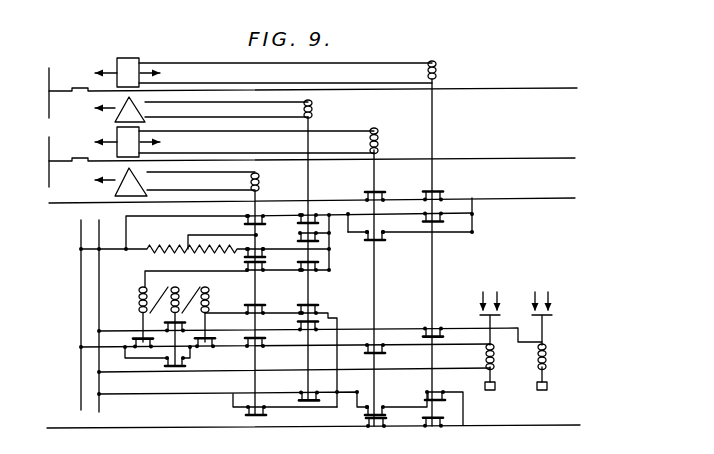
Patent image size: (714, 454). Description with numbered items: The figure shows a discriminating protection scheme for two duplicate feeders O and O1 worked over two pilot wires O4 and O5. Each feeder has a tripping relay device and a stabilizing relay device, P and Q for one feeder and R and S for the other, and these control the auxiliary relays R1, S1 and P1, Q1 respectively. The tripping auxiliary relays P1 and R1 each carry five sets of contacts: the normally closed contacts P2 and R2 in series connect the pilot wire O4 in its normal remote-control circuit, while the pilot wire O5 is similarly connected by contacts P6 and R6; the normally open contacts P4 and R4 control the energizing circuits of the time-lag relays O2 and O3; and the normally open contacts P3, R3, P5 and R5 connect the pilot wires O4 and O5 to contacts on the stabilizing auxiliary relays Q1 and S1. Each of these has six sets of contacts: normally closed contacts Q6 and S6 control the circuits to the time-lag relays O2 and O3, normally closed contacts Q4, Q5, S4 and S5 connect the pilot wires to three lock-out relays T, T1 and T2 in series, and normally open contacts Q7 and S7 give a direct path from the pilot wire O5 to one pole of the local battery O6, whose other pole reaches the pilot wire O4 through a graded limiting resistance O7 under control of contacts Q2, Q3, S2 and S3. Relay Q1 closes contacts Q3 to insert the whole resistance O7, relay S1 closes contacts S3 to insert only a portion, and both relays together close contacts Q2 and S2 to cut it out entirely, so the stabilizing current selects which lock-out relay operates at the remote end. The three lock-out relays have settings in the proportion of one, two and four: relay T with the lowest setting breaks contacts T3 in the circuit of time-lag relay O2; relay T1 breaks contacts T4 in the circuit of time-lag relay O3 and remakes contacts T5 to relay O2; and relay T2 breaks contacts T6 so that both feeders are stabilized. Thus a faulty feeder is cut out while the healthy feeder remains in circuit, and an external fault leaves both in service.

The tripping relay device P is at (117, 64).
The stabilizing relay device Q is at (115, 106).
The tripping relay device R is at (117, 133).
The stabilizing relay device S is at (115, 178).
The tripping auxiliary relay P1 is at (379, 141).
The stabilizing auxiliary relay Q1 is at (260, 181).
The tripping auxiliary relay R1 is at (437, 71).
The stabilizing auxiliary relay S1 is at (313, 108).
The second feeder O1 is at (542, 88).
The first feeder O is at (523, 157).
The pilot wire O4 is at (517, 198).
The pilot wire O5 is at (570, 425).
The local battery O6 is at (178, 272).
The graded limiting resistance O7 is at (164, 233).
The time-lag relay O2 is at (495, 352).
The time-lag relay O3 is at (547, 353).
The normally closed contacts P2 is at (377, 197).
The normally closed contacts R2 is at (443, 197).
The contacts Q2 is at (263, 216).
The contacts S2 is at (311, 223).
The contacts Q3 is at (263, 257).
The contacts S3 is at (317, 240).
The normally open contacts P3 is at (383, 241).
The normally open contacts R3 is at (441, 221).
The normally closed contacts Q4 is at (261, 270).
The normally closed contacts S4 is at (326, 272).
The normally closed contacts Q5 is at (259, 311).
The normally closed contacts S5 is at (321, 299).
The normally closed contacts S6 is at (316, 328).
The normally open contacts P4 is at (382, 343).
The normally open contacts R4 is at (442, 333).
The normally closed contacts Q6 is at (264, 342).
The normally open contacts Q7 is at (247, 414).
The normally open contacts S7 is at (303, 401).
The normally open contacts P5 is at (371, 413).
The normally closed contacts P6 is at (378, 427).
The normally open contacts R5 is at (463, 400).
The normally closed contacts R6 is at (428, 427).
The first lock-out relay T is at (141, 291).
The second lock-out relay T1 is at (180, 289).
The third lock-out relay T2 is at (211, 298).
The contacts T3 is at (140, 341).
The contacts T4 is at (172, 332).
The contacts T5 is at (175, 366).
The contacts T6 is at (201, 348).